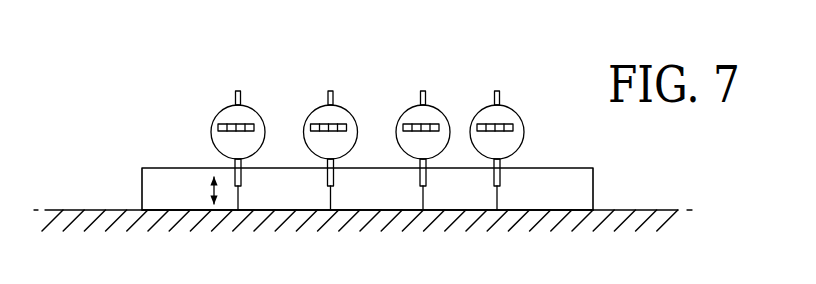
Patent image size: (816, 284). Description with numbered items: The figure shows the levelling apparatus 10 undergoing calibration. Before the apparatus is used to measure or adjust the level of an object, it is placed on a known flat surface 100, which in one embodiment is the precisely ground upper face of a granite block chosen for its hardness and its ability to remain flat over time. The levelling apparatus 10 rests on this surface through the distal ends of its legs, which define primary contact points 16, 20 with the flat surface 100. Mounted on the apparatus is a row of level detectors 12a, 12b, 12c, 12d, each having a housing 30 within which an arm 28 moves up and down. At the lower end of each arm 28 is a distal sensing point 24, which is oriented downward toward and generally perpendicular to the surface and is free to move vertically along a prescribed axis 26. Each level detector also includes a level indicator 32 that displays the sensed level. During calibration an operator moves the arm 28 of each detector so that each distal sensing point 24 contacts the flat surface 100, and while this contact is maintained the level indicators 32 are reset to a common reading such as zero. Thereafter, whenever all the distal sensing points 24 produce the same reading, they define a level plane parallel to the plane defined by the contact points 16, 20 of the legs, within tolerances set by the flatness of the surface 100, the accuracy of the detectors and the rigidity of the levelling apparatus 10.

The levelling apparatus 10 is at (565, 72).
The level detector 12a is at (231, 123).
The level detector 12b is at (349, 123).
The level detector 12c is at (441, 99).
The level detector 12d is at (516, 101).
The primary contact point 16 is at (142, 193).
The primary contact point 20 is at (595, 209).
The distal sensing point 24 is at (332, 209).
The prescribed axis 26 is at (210, 188).
The arm 28 is at (240, 200).
The housing 30 is at (262, 145).
The level indicator 32 is at (222, 125).
The flat surface 100 is at (659, 210).